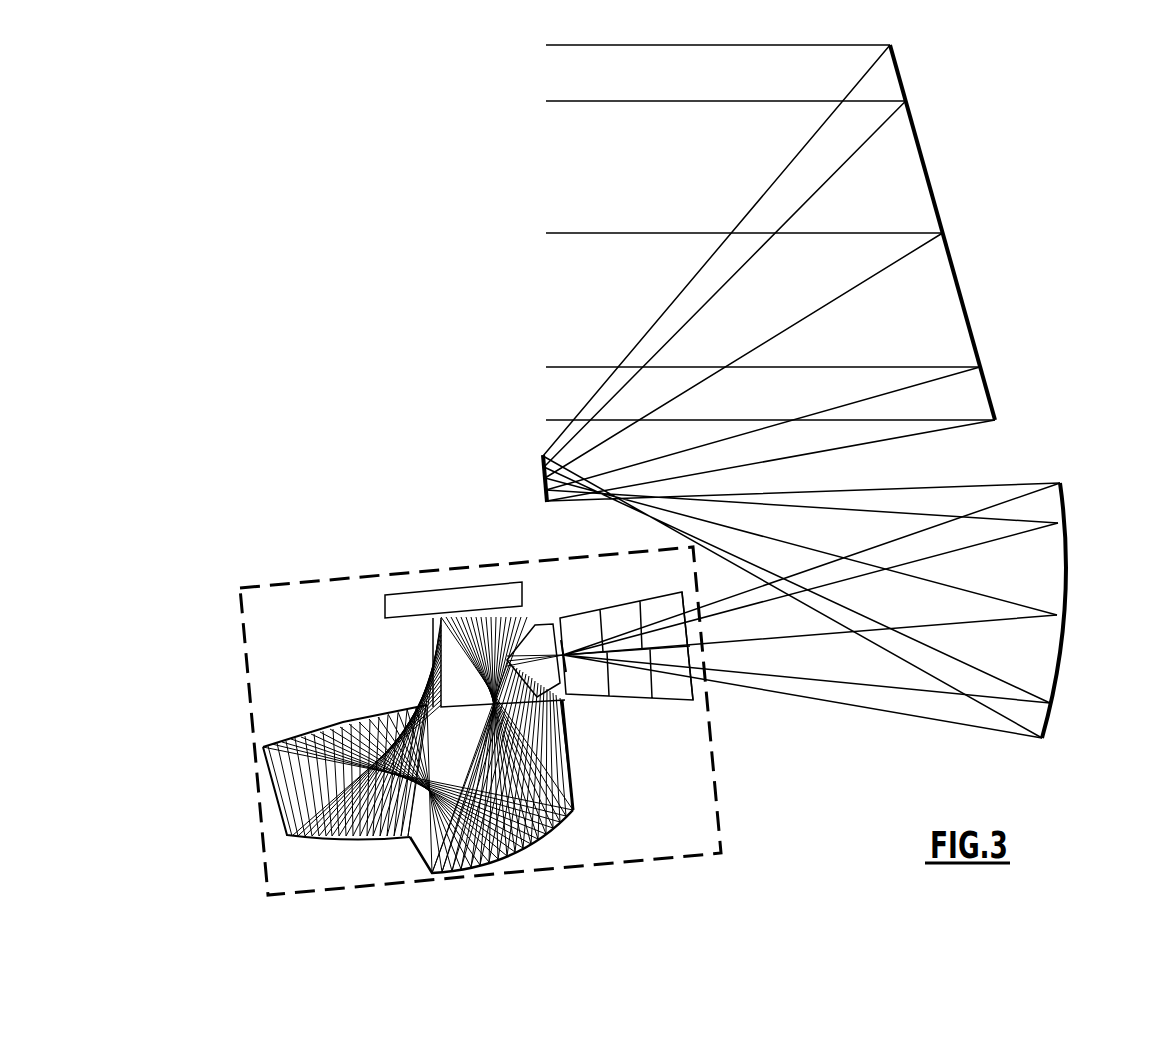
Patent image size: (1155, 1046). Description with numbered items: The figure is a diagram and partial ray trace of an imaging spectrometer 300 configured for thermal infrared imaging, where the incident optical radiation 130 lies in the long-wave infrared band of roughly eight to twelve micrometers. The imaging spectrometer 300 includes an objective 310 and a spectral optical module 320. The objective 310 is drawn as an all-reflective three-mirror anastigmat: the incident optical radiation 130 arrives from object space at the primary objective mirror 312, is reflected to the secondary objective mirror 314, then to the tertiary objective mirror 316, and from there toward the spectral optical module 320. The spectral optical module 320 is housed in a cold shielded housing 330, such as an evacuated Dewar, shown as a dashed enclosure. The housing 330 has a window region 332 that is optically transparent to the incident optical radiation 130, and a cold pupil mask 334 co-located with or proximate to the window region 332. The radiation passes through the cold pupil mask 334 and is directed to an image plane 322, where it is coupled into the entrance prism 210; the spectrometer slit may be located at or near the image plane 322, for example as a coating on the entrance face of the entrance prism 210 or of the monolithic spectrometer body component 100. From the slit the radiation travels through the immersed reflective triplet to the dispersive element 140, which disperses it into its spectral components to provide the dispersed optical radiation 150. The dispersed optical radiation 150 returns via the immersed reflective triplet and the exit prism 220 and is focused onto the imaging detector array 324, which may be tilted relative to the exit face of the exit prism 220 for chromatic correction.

The imaging spectrometer 300 is at (348, 290).
The incident optical radiation 130 is at (607, 114).
The objective 310 is at (1025, 367).
The primary objective mirror 312 is at (936, 189).
The secondary objective mirror 314 is at (536, 478).
The tertiary objective mirror 316 is at (1062, 578).
The spectral optical module 320 is at (478, 543).
The image plane 322 is at (570, 670).
The imaging detector array 324 is at (424, 598).
The housing 330 is at (338, 894).
The window region 332 is at (718, 657).
The cold pupil mask 334 is at (698, 692).
The entrance prism 210 is at (547, 625).
The exit prism 220 is at (428, 632).
The dispersed optical radiation 150 is at (440, 665).
The dispersive element 140 is at (300, 726).
The monolithic spectrometer body component 100 is at (549, 835).